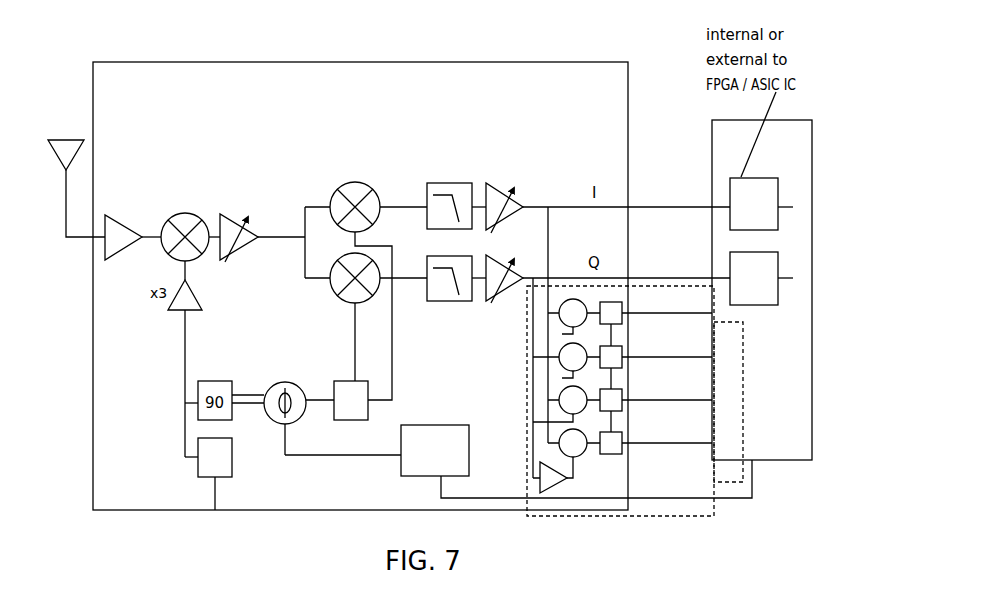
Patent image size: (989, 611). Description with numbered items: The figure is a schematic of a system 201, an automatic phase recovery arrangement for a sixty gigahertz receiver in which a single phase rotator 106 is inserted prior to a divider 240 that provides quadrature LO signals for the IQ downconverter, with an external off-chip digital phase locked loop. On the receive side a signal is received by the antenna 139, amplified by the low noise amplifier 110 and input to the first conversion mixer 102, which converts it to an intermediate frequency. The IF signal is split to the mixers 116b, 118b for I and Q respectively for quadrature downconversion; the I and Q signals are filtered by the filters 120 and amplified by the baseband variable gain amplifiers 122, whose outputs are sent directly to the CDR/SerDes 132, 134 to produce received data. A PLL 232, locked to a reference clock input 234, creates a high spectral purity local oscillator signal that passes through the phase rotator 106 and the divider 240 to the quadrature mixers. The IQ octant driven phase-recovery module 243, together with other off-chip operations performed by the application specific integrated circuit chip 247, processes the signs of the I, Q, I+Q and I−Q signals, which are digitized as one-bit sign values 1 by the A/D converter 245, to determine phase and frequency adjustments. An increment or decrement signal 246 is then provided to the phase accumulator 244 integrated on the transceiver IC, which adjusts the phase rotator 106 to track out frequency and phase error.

The system 201 is at (240, 50).
The antenna 139 is at (67, 207).
The low noise amplifier 110 is at (115, 213).
The first conversion mixer 102 is at (177, 212).
The baseband variable gain amplifier 122 is at (238, 212).
The second conversion quadrature mixer 116b is at (345, 183).
The second conversion quadrature mixer 118b is at (332, 295).
The filter 120 is at (433, 183).
The CDR/SerDes 132 is at (762, 175).
The CDR/SerDes 134 is at (778, 292).
The application specific integrated circuit chip 247 is at (818, 420).
The A/D converter 245 is at (575, 516).
The one-bit sign signal 1 is at (686, 321).
The IQ octant driven phase-recovery module 243 is at (733, 452).
The inc/dec signal 246 is at (440, 483).
The phase accumulator 244 is at (401, 467).
The phase rotator 106 is at (305, 418).
The divider 240 is at (368, 415).
The PLL 232 is at (232, 447).
The reference clock input 234 is at (220, 512).